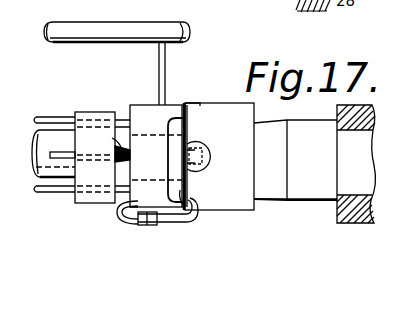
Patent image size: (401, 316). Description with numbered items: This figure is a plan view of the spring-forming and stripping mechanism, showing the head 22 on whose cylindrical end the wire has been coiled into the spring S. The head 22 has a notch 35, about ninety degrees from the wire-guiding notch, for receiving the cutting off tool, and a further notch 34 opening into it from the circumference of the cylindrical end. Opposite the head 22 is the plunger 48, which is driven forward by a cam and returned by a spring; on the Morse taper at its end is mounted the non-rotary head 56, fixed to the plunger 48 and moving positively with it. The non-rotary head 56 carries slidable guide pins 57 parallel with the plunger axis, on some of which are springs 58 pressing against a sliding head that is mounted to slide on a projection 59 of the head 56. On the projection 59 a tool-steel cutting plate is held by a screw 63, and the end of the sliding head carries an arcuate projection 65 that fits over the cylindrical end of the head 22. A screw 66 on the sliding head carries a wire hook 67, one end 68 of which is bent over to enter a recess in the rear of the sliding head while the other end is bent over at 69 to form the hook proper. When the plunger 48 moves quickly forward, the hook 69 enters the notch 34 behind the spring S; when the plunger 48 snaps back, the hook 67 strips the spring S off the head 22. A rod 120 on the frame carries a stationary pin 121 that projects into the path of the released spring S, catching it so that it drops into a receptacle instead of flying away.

The rod 120 is at (113, 19).
The stationary pin 121 is at (159, 66).
The slidable guide pins 57 is at (64, 117).
The non-rotary head 56 is at (94, 112).
The plunger 48 is at (32, 158).
The springs 58 is at (114, 145).
The projection 59 is at (172, 157).
The arcuate projection 65 is at (188, 106).
The spring S is at (188, 128).
The notch 35 is at (208, 157).
The screw 63 is at (205, 167).
The notch 34 is at (202, 202).
The bent-over end of hook 68 is at (117, 213).
The hook 67 is at (130, 224).
The screw 66 is at (146, 226).
The hook proper 69 is at (192, 216).
The head 22 is at (251, 211).